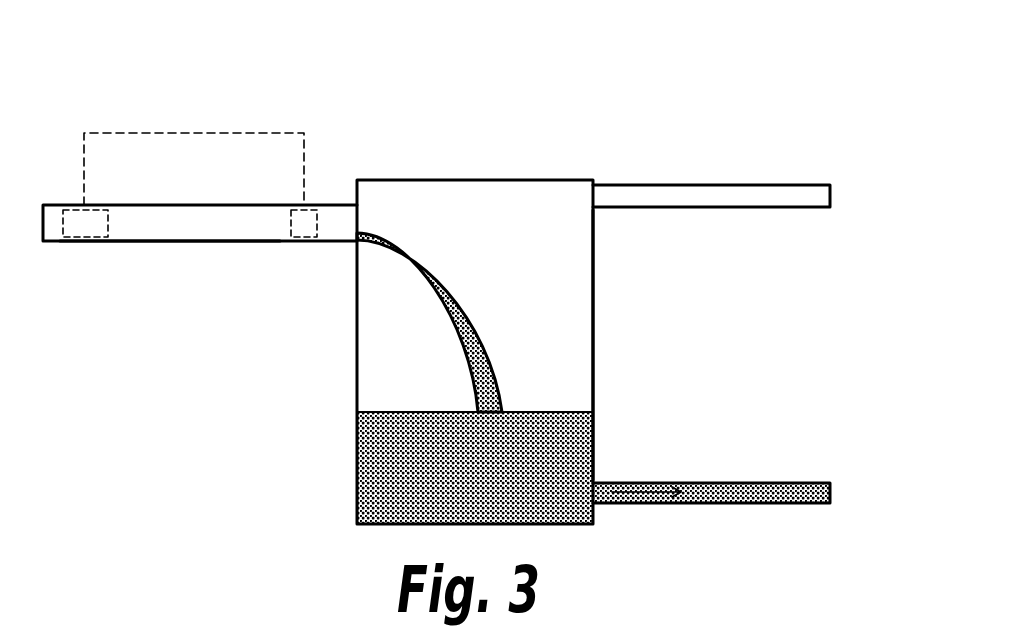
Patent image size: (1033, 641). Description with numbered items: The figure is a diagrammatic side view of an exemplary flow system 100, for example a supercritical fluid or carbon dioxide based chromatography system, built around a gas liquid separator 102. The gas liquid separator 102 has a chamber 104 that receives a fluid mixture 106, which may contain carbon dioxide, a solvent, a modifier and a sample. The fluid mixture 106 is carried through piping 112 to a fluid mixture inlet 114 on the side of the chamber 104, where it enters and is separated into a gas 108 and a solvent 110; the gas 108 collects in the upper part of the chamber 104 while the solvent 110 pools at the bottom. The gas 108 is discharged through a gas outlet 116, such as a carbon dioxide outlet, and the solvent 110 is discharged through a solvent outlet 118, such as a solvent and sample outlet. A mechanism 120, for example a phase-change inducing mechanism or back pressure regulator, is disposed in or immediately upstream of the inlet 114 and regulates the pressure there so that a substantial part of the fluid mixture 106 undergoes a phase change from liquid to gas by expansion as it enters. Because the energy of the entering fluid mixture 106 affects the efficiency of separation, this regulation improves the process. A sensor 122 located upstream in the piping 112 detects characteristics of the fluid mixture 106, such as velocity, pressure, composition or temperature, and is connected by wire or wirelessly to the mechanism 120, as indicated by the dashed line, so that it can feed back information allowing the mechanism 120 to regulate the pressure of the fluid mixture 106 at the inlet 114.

The flow system 100 is at (643, 74).
The gas liquid separator 102 is at (478, 179).
The chamber 104 is at (594, 302).
The fluid mixture 106 is at (222, 216).
The gas 108 is at (521, 249).
The solvent 110 is at (543, 418).
The piping 112 is at (135, 241).
The fluid mixture inlet 114 is at (360, 217).
The gas outlet 116 is at (594, 195).
The solvent outlet 118 is at (594, 488).
The mechanism 120 is at (300, 239).
The sensor 122 is at (100, 240).